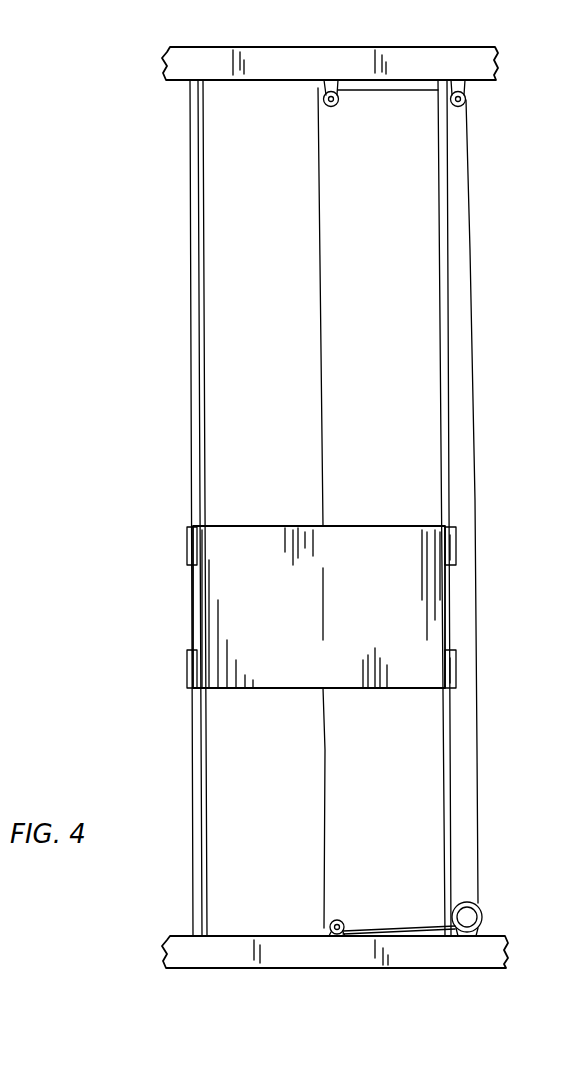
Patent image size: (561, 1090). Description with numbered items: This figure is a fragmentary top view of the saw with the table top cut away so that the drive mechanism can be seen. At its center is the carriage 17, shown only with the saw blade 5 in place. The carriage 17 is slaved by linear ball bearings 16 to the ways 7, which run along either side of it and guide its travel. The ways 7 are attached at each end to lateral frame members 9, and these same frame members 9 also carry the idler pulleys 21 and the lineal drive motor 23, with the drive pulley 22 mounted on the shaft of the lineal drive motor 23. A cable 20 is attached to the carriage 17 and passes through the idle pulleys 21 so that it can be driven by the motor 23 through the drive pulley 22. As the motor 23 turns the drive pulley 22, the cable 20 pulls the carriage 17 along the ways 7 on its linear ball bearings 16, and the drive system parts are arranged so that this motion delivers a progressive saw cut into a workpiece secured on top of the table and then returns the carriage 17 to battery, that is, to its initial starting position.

The saw blade 5 is at (325, 608).
The ways 7 is at (205, 153).
The lateral frame members 9 is at (188, 68).
The linear ball bearings 16 is at (187, 544).
The carriage 17 is at (375, 690).
The cable 20 is at (318, 297).
The idler pulleys 21 is at (336, 105).
The drive pulley 22 is at (478, 906).
The lineal drive motor 23 is at (482, 919).